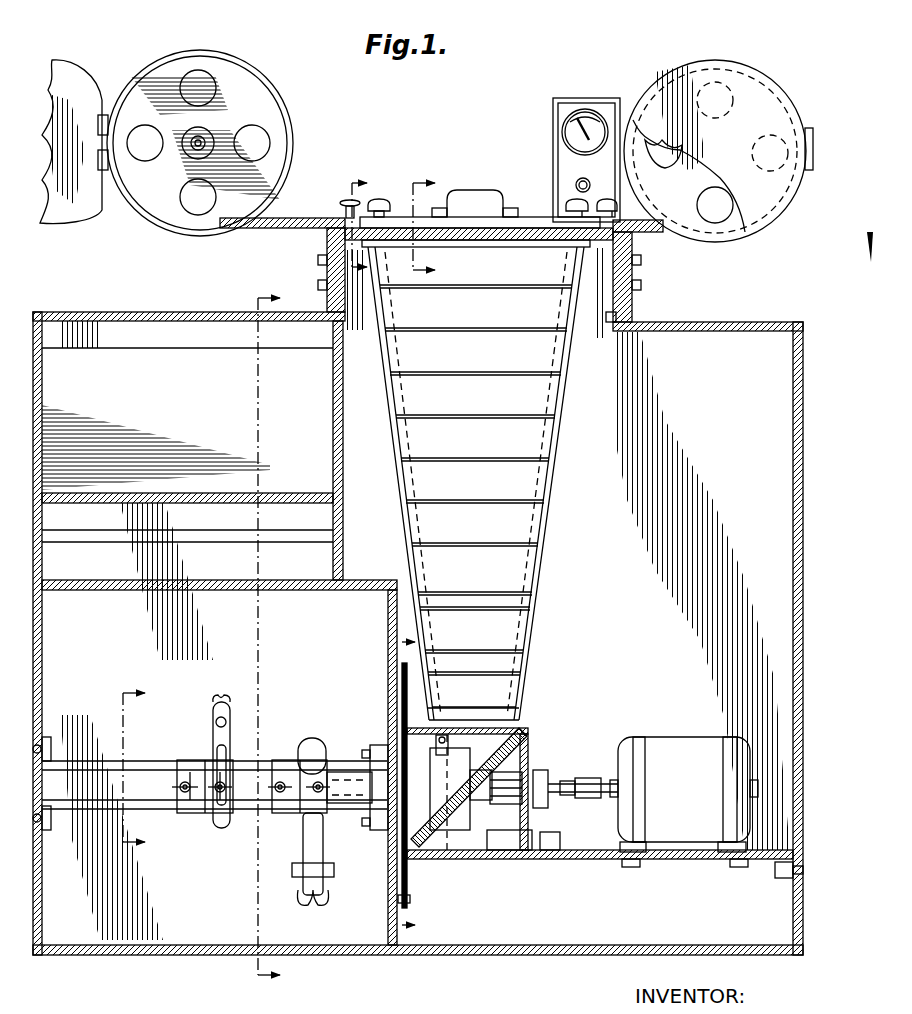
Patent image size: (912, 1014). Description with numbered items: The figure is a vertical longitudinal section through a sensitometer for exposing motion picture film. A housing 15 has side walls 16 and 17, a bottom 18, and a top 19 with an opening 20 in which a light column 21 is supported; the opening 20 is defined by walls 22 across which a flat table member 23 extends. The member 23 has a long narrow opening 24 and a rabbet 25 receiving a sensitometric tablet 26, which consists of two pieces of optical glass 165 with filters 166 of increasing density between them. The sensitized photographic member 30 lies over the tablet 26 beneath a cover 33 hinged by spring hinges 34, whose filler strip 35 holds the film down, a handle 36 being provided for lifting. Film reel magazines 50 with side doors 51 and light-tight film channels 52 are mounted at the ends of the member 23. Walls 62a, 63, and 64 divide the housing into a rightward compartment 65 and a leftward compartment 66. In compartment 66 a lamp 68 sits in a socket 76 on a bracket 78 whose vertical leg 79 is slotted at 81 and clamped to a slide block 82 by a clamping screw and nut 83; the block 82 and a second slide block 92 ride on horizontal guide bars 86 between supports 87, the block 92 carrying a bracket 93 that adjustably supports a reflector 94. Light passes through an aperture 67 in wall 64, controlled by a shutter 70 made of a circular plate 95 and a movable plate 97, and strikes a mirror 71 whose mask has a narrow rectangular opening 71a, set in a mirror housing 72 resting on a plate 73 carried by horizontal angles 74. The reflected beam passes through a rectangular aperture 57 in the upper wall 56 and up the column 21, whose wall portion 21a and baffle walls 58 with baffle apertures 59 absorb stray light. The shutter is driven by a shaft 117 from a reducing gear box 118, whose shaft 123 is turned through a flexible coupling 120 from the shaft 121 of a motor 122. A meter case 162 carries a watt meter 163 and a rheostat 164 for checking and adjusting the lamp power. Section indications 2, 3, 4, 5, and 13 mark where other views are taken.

The section line 2- 2 is at (267, 639).
The section line 3- 3 is at (432, 228).
The section line 4- 4 is at (358, 230).
The section line 5- 5 is at (408, 781).
The section line 13- 13 is at (131, 769).
The housing 15 is at (418, 635).
The side wall 16 is at (42, 385).
The side wall 17 is at (718, 425).
The bottom 18 is at (445, 955).
The top 19 is at (693, 322).
The opening 20 is at (616, 316).
The light column 21 is at (484, 480).
The hopper wall 21a is at (522, 458).
The walls 22 is at (345, 300).
The flat table member 23 is at (632, 262).
The opening 24 is at (534, 250).
The rabbet 25 is at (580, 255).
The sensitometric tablet 26 is at (528, 250).
The sensitized photographic member 30 is at (235, 228).
The cover 33 is at (490, 217).
The spring hinges 34 is at (381, 199).
The filler strip 35 is at (383, 250).
The handle 36 is at (495, 196).
The film reel magazines 50 is at (278, 110).
The side doors 51 is at (78, 95).
The light-tight film channels 52 is at (336, 218).
The upper wall 56 is at (528, 728).
The rectangular aperture 57 is at (515, 728).
The baffle walls 58 is at (443, 543).
The baffle apertures 59 is at (477, 605).
The wall 62a is at (343, 458).
The wall 63 is at (378, 568).
The wall 64 is at (388, 624).
The rightward compartment 65 is at (690, 626).
The leftward compartment 66 is at (236, 666).
The aperture 67 is at (378, 860).
The lamp 68 is at (303, 830).
The shutter 70 is at (400, 885).
The mirror 71 is at (480, 850).
The narrow rectangular opening 71a is at (455, 745).
The mirror box or housing 72 is at (528, 760).
The plate 73 is at (540, 859).
The horizontal angles 74 is at (412, 885).
The socket 76 is at (292, 870).
The bracket 78 is at (310, 890).
The vertical leg or plate 79 is at (313, 738).
The slot 81 is at (318, 745).
The slide block 82 is at (310, 760).
The clamping screw and nut 83 is at (322, 782).
The horizontal guide bars 86 is at (260, 760).
The supports 87 is at (46, 830).
The slide block 92 is at (190, 813).
The bracket 93 is at (228, 718).
The reflector 94 is at (200, 755).
The circular plate 95 is at (400, 672).
The movable plate 97 is at (410, 905).
The shaft 117 is at (465, 790).
The reducing gear box 118 is at (540, 770).
The flexible coupling 120 is at (585, 797).
The shaft 121 is at (586, 777).
The motor 122 is at (700, 750).
The shaft 123 is at (562, 795).
The meter case 162 is at (570, 142).
The watt meter 163 is at (568, 128).
The rheostat 164 is at (575, 180).
The pieces of optical glass 165 is at (504, 248).
The filters 166 is at (474, 250).